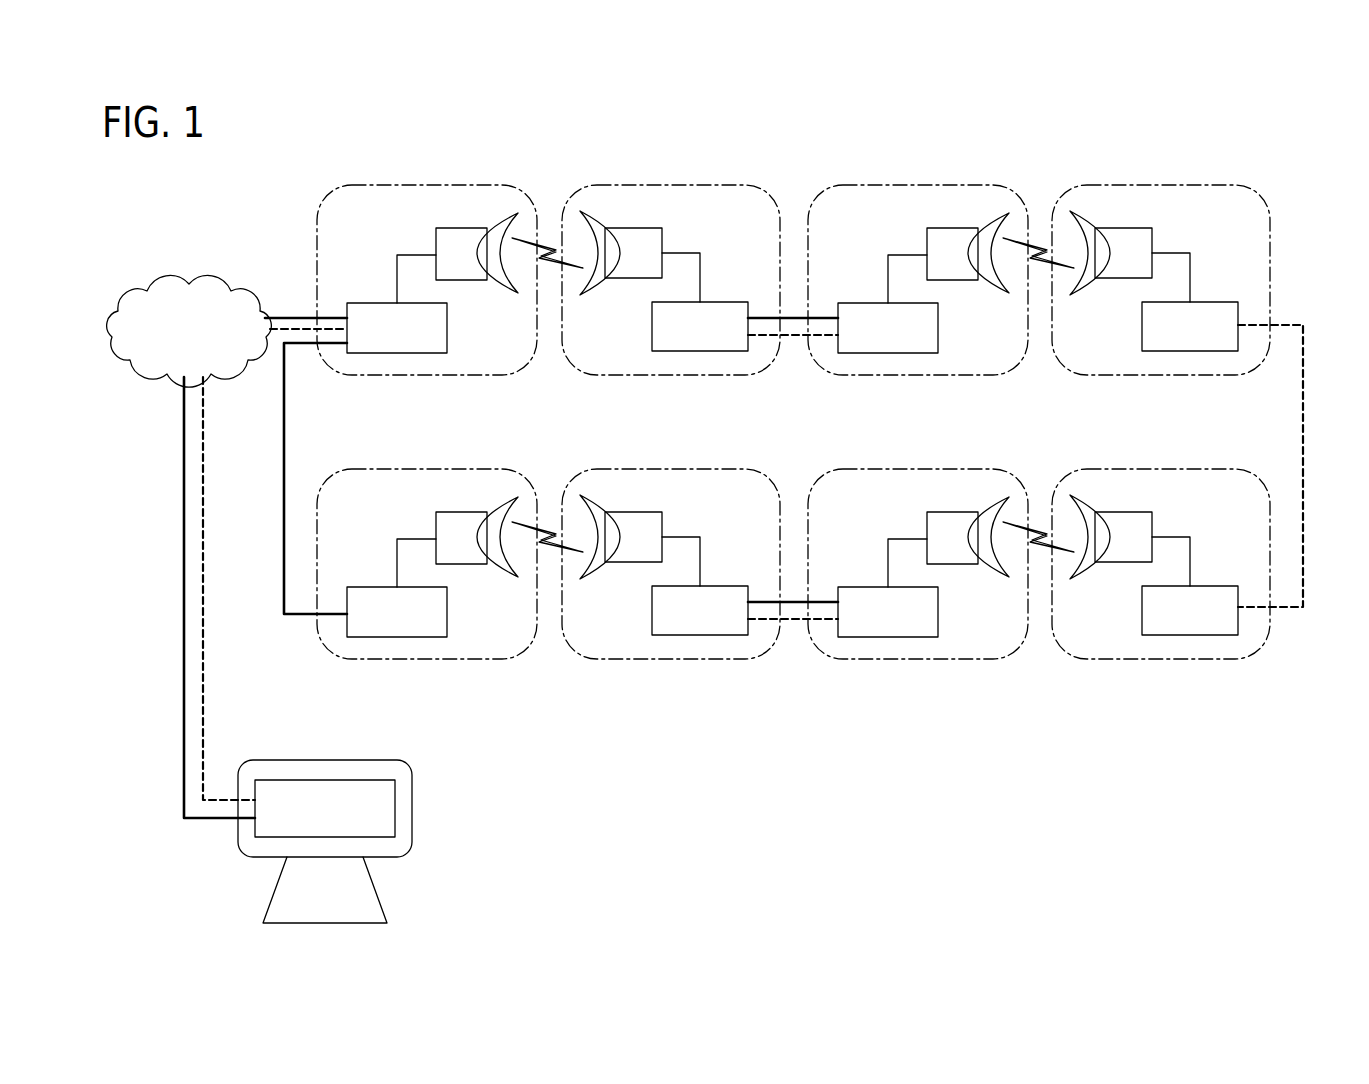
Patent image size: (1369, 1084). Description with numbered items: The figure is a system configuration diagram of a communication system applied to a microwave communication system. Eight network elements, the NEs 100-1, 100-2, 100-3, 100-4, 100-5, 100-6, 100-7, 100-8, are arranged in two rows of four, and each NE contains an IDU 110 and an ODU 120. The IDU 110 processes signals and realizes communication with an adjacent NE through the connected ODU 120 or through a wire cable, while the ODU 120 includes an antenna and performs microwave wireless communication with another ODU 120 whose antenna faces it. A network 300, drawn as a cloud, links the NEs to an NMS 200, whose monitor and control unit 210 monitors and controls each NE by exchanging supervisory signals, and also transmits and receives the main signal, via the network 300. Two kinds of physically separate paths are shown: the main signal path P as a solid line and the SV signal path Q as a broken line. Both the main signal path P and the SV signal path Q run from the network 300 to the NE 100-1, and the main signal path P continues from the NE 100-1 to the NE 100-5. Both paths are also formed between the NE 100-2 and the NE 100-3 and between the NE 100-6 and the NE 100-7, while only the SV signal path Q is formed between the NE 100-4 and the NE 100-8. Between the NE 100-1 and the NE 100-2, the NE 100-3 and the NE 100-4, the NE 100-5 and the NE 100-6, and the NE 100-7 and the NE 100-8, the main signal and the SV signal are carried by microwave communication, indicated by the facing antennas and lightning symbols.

The NE (network element) 100-1 is at (443, 183).
The NE (network element) 100-2 is at (688, 183).
The NE (network element) 100-3 is at (934, 183).
The NE (network element) 100-4 is at (1178, 183).
The NE (network element) 100-5 is at (443, 467).
The NE (network element) 100-6 is at (688, 467).
The NE (network element) 100-7 is at (934, 467).
The NE (network element) 100-8 is at (1178, 467).
The IDU (indoor unit) 110 is at (727, 302).
The ODU (outdoor unit) 120 is at (663, 237).
The NMS (network management system) 200 is at (378, 759).
The monitor and control unit 210 is at (308, 779).
The network 300 is at (200, 281).
The main signal path P is at (291, 316).
The SV signal path Q is at (278, 334).